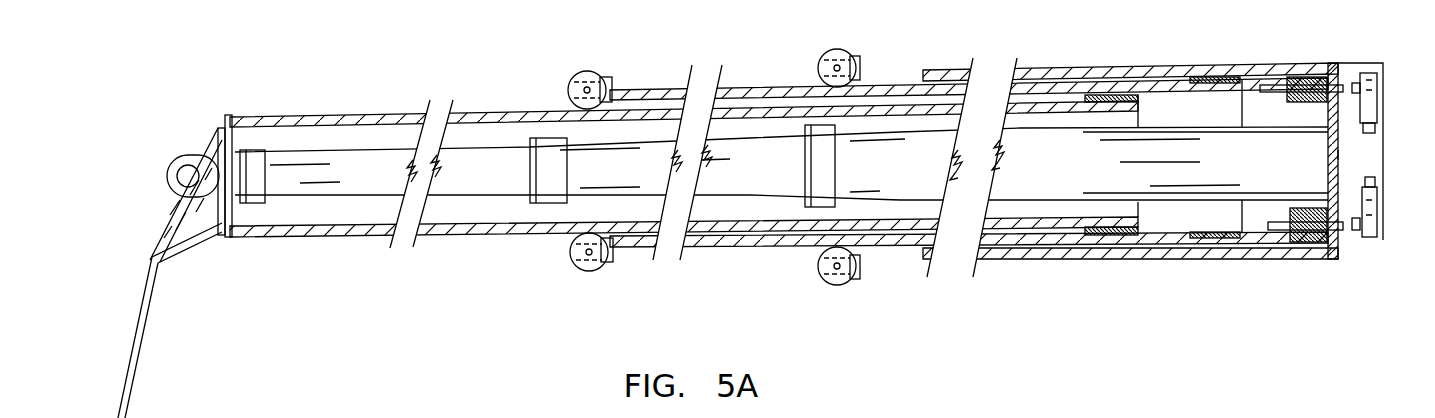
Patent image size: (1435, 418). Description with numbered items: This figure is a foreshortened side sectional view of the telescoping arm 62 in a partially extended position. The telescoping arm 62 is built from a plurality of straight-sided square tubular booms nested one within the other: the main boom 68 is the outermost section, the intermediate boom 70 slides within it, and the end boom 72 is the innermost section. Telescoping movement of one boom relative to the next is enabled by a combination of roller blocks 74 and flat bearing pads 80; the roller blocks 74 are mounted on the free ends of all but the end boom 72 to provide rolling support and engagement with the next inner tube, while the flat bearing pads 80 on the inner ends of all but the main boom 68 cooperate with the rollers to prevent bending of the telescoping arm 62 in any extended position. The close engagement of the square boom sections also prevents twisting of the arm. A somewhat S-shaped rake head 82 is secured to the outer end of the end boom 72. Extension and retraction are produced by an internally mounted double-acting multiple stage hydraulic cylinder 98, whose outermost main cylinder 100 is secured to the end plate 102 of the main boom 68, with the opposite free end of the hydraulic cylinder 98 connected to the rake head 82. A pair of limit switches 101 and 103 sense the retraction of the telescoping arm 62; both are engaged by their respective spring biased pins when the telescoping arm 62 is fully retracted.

The telescoping arm 62 is at (1076, 58).
The main boom 68 is at (923, 73).
The intermediate boom 70 is at (747, 83).
The end boom 72 is at (330, 115).
The roller blocks 74 is at (618, 271).
The flat bearing pads 80 is at (1120, 95).
The rake head 82 is at (137, 382).
The hydraulic cylinder 98 is at (752, 200).
The main cylinder 100 is at (1057, 177).
The limit switch 101 is at (1372, 237).
The end plate 102 is at (1338, 153).
The limit switch 103 is at (1372, 102).